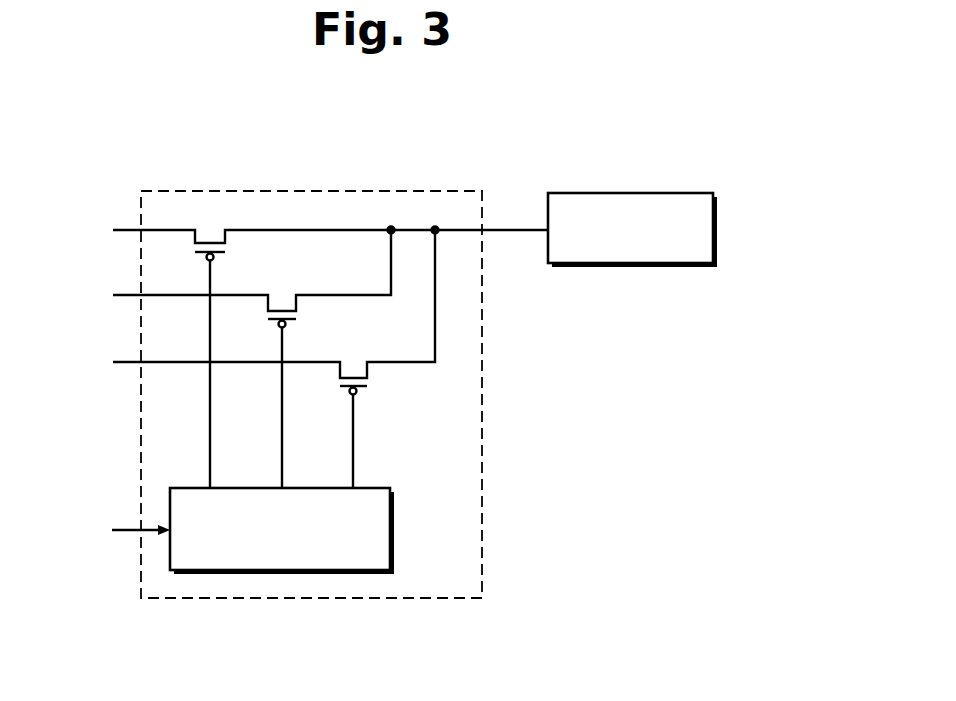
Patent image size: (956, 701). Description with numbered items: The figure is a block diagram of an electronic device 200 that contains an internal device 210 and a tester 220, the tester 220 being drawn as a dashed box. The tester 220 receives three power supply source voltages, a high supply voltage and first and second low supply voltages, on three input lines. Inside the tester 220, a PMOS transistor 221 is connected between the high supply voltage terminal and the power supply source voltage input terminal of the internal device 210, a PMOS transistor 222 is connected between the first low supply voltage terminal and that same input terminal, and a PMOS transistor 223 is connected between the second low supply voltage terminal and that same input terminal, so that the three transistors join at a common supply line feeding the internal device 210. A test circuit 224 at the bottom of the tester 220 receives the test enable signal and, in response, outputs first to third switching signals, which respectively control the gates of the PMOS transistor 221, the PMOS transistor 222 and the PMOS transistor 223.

The electronic device 200 is at (722, 102).
The internal device 210 is at (675, 193).
The tester 220 is at (482, 393).
The PMOS transistor 221 is at (210, 345).
The PMOS transistor 222 is at (279, 378).
The PMOS transistor 223 is at (351, 412).
The test circuit 224 is at (391, 528).